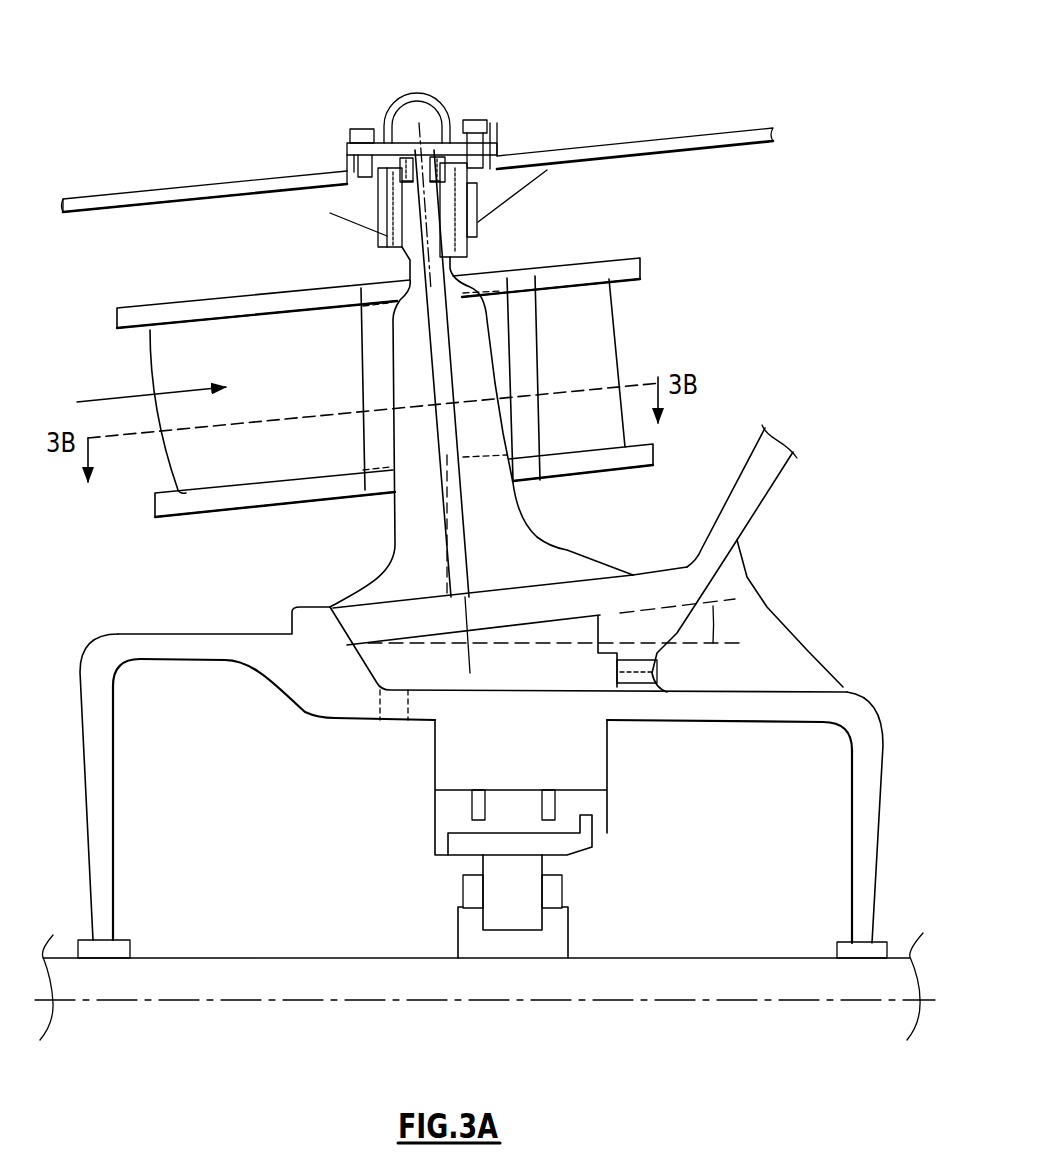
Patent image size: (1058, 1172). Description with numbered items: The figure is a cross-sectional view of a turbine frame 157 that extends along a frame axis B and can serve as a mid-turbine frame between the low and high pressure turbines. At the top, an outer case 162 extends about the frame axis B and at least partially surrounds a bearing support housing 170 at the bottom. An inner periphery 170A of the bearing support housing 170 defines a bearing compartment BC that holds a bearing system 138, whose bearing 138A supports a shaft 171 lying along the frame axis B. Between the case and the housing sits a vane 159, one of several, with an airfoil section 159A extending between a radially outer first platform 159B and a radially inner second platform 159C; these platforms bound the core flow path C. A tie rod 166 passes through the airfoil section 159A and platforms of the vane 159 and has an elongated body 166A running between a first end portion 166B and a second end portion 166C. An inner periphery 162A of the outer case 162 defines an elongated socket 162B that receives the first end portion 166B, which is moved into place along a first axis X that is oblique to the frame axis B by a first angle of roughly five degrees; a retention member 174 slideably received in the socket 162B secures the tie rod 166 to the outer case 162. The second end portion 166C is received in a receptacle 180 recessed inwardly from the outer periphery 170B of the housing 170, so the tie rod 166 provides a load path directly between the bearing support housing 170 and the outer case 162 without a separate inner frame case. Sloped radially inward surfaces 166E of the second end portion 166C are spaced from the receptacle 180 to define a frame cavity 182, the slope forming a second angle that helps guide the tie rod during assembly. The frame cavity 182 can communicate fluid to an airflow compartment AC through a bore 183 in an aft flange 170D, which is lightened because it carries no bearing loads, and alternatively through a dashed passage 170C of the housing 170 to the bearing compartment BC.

The turbine frame 157 is at (107, 78).
The outer case 162 is at (203, 184).
The inner periphery 162A is at (228, 202).
The socket 162B is at (447, 184).
The retention member 174 is at (506, 220).
The tie rod 166 is at (494, 262).
The elongated body 166A is at (495, 384).
The first end portion 166B is at (399, 270).
The second end portion 166C is at (546, 540).
The radially inward surface 166E is at (655, 668).
The vane 159 is at (99, 313).
The airfoil section 159A is at (173, 343).
The first platform 159B is at (220, 310).
The second platform 159C is at (233, 497).
The receptacle 180 is at (634, 563).
The bearing support housing 170 is at (92, 633).
The inner periphery 170A is at (170, 662).
The outer periphery 170B is at (188, 634).
The passage 170C is at (381, 711).
The aft flange 170D is at (761, 506).
The frame cavity 182 is at (421, 676).
The bore 183 is at (657, 667).
The shaft 171 is at (287, 957).
The bearing system 138 is at (604, 877).
The bearing 138A is at (564, 896).
The frame axis B is at (778, 1002).
The first axis X is at (470, 660).
The core flow path C is at (141, 402).
The airflow compartment AC is at (791, 676).
The bearing compartment BC is at (268, 801).